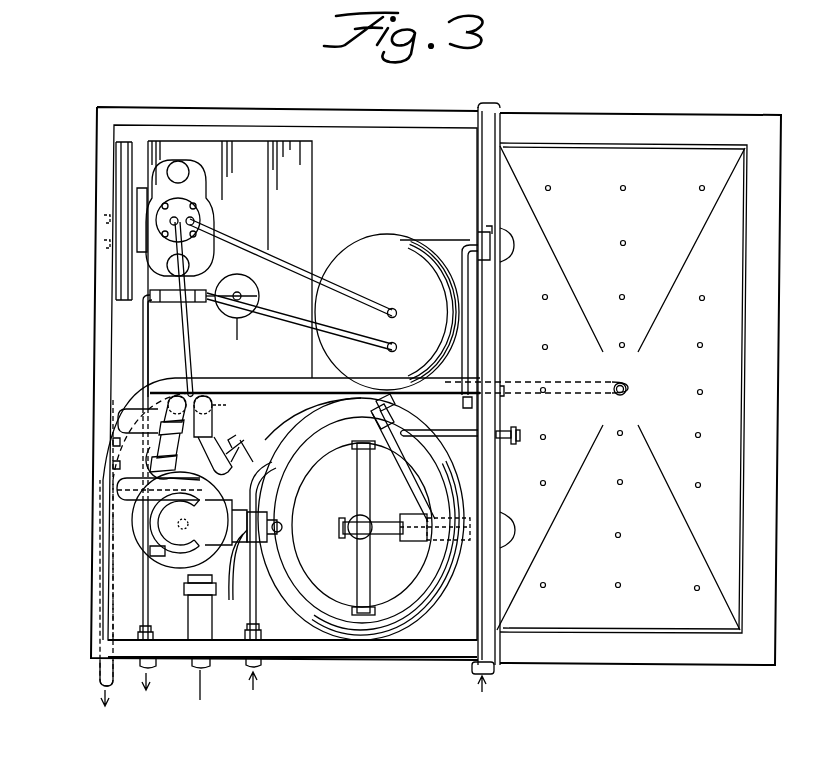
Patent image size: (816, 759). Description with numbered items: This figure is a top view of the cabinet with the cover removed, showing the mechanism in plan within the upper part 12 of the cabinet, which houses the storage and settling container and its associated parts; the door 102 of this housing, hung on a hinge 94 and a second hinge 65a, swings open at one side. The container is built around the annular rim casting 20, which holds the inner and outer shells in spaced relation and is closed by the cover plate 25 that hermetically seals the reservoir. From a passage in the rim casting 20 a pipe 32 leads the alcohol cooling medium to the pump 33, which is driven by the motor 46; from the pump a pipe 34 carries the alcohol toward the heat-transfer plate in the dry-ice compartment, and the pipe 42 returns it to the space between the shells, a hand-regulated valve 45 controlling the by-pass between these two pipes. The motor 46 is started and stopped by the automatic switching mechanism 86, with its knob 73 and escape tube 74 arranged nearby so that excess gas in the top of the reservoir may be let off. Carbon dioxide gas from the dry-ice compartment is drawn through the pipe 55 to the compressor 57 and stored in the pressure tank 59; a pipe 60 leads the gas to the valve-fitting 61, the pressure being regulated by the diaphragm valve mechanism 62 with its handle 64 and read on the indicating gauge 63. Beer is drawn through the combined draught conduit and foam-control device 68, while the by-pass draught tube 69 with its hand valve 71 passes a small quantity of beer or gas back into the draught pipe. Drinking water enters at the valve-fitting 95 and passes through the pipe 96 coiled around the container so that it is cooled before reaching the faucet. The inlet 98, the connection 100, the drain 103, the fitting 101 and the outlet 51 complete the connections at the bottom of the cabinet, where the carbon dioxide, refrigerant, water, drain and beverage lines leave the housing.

The upper part of the cabinet 12 is at (97, 160).
The door 102 is at (667, 170).
The faucet 94 is at (505, 250).
The hinge 65a is at (508, 530).
The automatic switching mechanism 86 is at (502, 398).
The escape valve 73 is at (508, 442).
The escape tube 74 is at (430, 430).
The compressor 57 is at (204, 212).
The pressure tank 59 is at (360, 255).
The pipe 96 is at (463, 372).
The pipe 55 is at (150, 297).
The pipe 60 is at (143, 350).
The diaphragm valve mechanism 62 is at (252, 318).
The indicating gauge 63 is at (194, 305).
The handle 64 is at (239, 341).
The pipe 34 is at (180, 395).
The pipe 42 is at (199, 439).
The hand-regulated valve 45 is at (247, 440).
The motor 46 is at (118, 420).
The pump 33 is at (132, 527).
The annular rim casting 20 is at (300, 462).
The cover plate 25 is at (362, 528).
The by-pass draught tube 69 is at (410, 480).
The hand valve 71 is at (373, 430).
The combined draught conduit and foam-control device 68 is at (413, 542).
The inlet fitting 98 is at (283, 532).
The pipe 32 is at (243, 566).
The refrigerant connection 100 is at (212, 611).
The drain pipe 103 is at (100, 668).
The valve-fitting 61 is at (154, 665).
The refrigerant inlet 101 is at (210, 666).
The valve-fitting 95 is at (262, 663).
The beverage outlet 51 is at (494, 670).